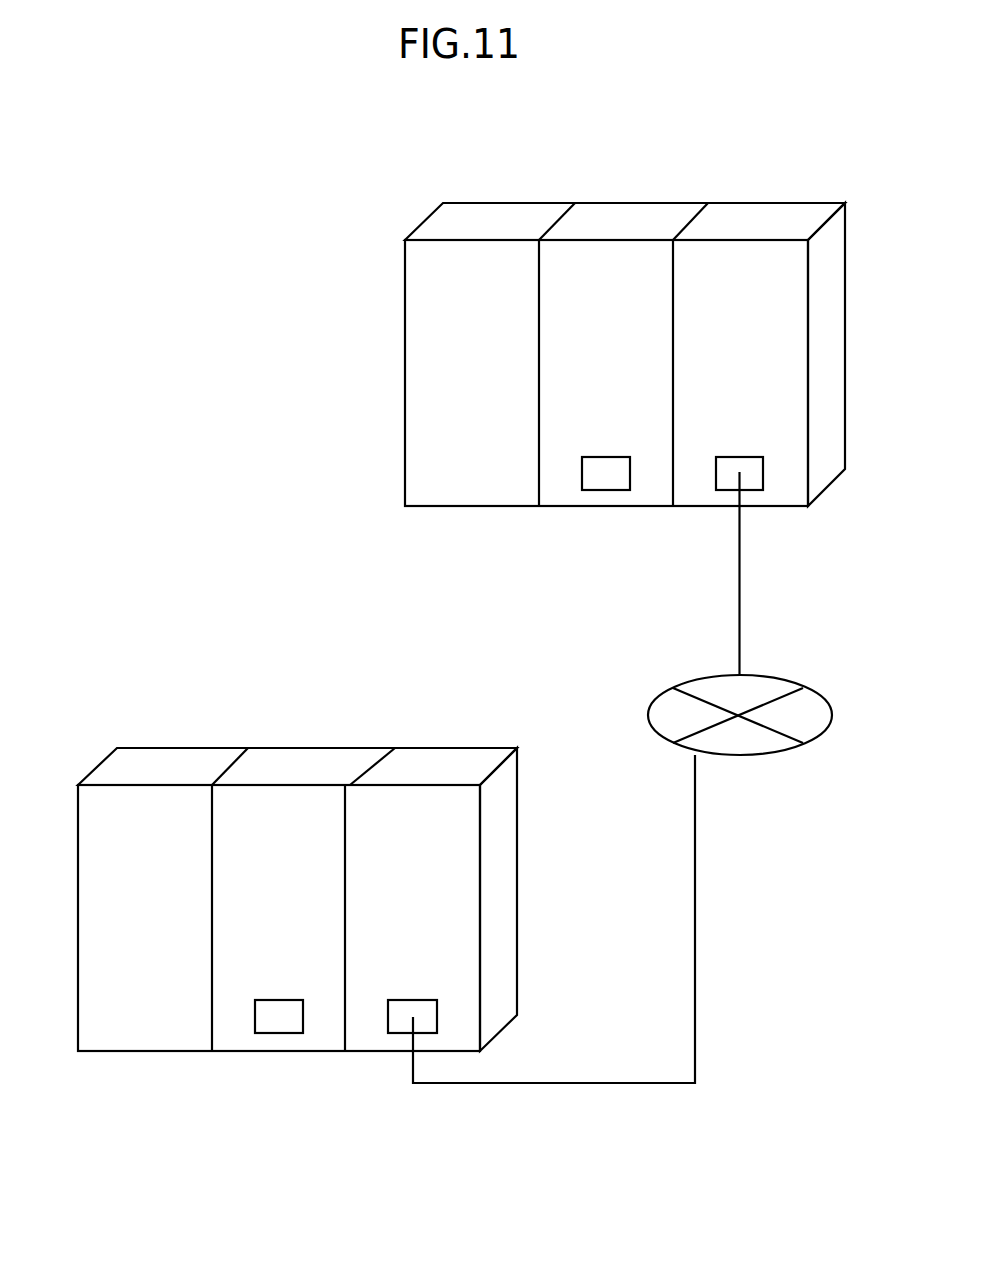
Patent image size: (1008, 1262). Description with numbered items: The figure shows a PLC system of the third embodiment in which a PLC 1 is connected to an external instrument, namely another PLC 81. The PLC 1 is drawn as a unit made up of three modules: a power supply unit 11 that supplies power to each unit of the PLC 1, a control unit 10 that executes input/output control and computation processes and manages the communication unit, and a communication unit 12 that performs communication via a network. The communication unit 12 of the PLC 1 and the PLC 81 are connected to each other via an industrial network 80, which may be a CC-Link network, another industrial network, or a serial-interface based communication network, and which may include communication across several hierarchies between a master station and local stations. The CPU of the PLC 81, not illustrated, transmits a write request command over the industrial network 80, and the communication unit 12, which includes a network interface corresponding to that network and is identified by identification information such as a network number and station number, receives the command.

The PLC 1 is at (745, 172).
The control unit 10 is at (657, 203).
The power supply unit 11 is at (523, 203).
The communication unit 12 is at (788, 203).
The industrial network 80 is at (773, 676).
The PLC 81 is at (420, 714).